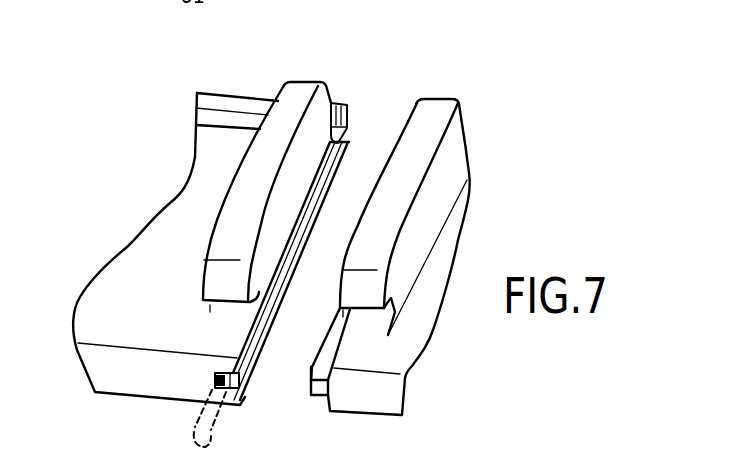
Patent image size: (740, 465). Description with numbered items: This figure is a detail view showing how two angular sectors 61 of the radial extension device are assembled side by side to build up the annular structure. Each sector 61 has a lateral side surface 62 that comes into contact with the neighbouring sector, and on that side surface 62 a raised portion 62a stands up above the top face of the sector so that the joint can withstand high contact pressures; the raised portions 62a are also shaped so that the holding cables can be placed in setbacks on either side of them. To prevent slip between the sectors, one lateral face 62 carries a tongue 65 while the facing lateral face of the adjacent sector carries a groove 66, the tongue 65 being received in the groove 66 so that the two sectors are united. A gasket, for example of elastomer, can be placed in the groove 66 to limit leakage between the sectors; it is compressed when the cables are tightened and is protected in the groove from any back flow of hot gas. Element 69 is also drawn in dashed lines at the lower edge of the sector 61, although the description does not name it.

The bearing body 61 is at (131, 282).
The clip 62 is at (313, 136).
The slanted guide block 62a is at (262, 167).
The guide rail 65 is at (320, 365).
The stop block 66 is at (247, 382).
The pin 69 is at (200, 424).